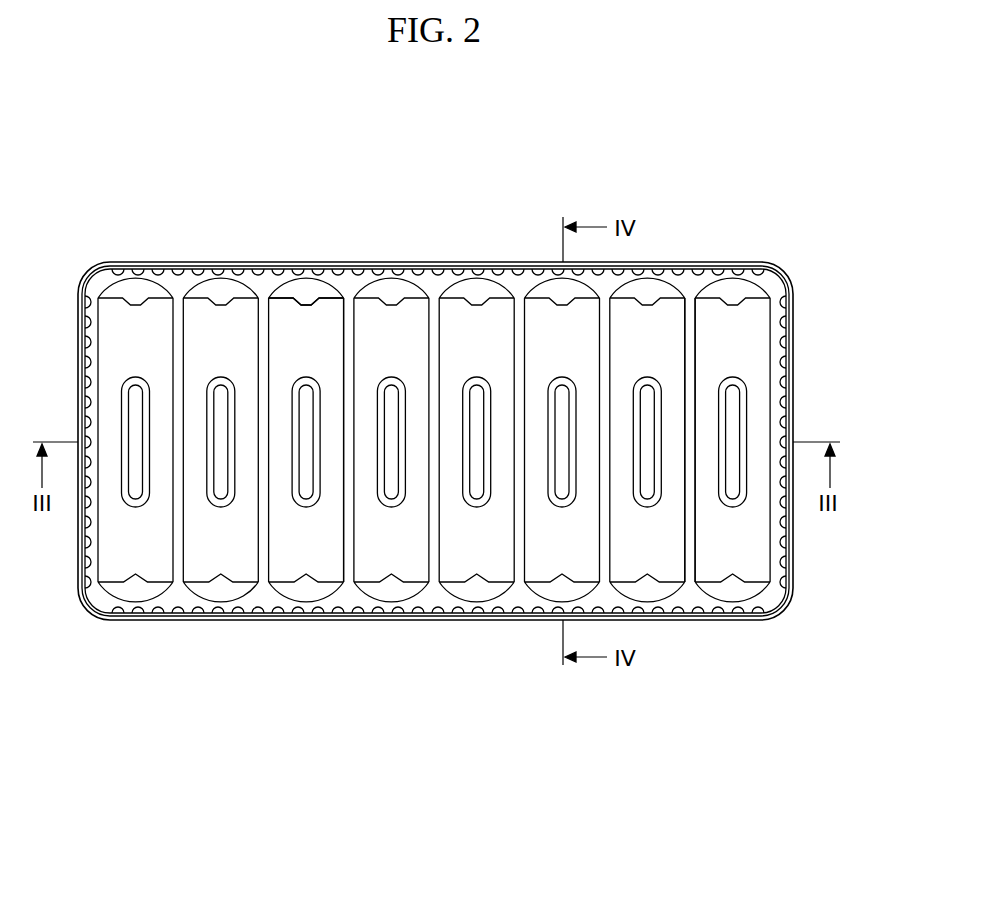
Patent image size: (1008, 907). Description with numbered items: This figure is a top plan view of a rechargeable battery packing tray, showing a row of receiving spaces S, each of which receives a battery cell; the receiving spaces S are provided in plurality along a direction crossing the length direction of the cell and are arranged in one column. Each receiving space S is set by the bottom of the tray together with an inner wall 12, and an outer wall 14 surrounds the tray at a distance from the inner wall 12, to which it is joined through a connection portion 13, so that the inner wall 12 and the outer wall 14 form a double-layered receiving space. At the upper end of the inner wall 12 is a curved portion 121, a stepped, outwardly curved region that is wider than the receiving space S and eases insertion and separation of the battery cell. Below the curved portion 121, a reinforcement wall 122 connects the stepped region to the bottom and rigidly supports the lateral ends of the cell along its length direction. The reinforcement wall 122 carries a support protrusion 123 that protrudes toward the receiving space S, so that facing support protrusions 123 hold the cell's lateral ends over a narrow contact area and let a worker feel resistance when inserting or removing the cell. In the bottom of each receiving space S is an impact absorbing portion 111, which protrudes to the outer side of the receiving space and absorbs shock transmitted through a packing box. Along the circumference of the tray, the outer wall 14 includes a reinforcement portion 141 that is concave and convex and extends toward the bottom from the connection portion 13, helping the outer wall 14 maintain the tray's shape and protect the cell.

The inner wall 12 is at (645, 328).
The connection portion 13 is at (688, 313).
The outer wall 14 is at (795, 330).
The reinforcement portion 141 is at (489, 268).
The impact absorbing portion 111 is at (650, 507).
The curved portion 121 is at (302, 300).
The reinforcement wall 122 is at (356, 300).
The support protrusion 123 is at (292, 300).
The receiving space S is at (124, 333).